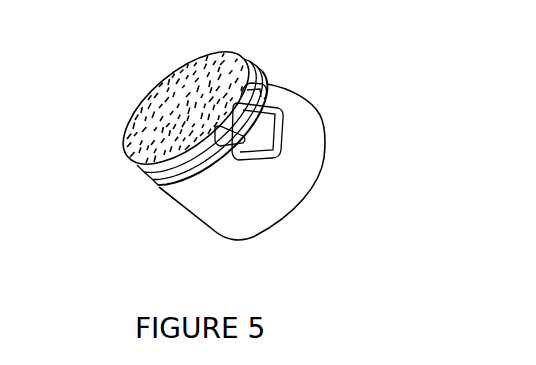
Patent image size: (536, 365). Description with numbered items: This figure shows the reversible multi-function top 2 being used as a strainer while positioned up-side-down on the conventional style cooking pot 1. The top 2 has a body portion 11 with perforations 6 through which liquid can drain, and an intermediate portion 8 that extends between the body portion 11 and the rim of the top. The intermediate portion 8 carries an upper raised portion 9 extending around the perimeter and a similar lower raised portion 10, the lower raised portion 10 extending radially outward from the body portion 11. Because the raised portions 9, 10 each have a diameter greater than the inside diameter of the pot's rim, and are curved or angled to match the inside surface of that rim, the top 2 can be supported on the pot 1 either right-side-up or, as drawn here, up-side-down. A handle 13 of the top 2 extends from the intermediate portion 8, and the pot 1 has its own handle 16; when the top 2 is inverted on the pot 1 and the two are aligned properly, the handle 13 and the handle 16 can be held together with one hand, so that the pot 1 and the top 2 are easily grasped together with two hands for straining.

The pot 1 is at (326, 186).
The top 2 is at (226, 134).
The perforations 6 is at (130, 118).
The intermediate portion 8 is at (144, 181).
The upper raised portion 9 is at (157, 185).
The lower raised portion 10 is at (139, 170).
The body portion 11 is at (197, 60).
The handle 13 is at (267, 84).
The handle 16 is at (281, 110).